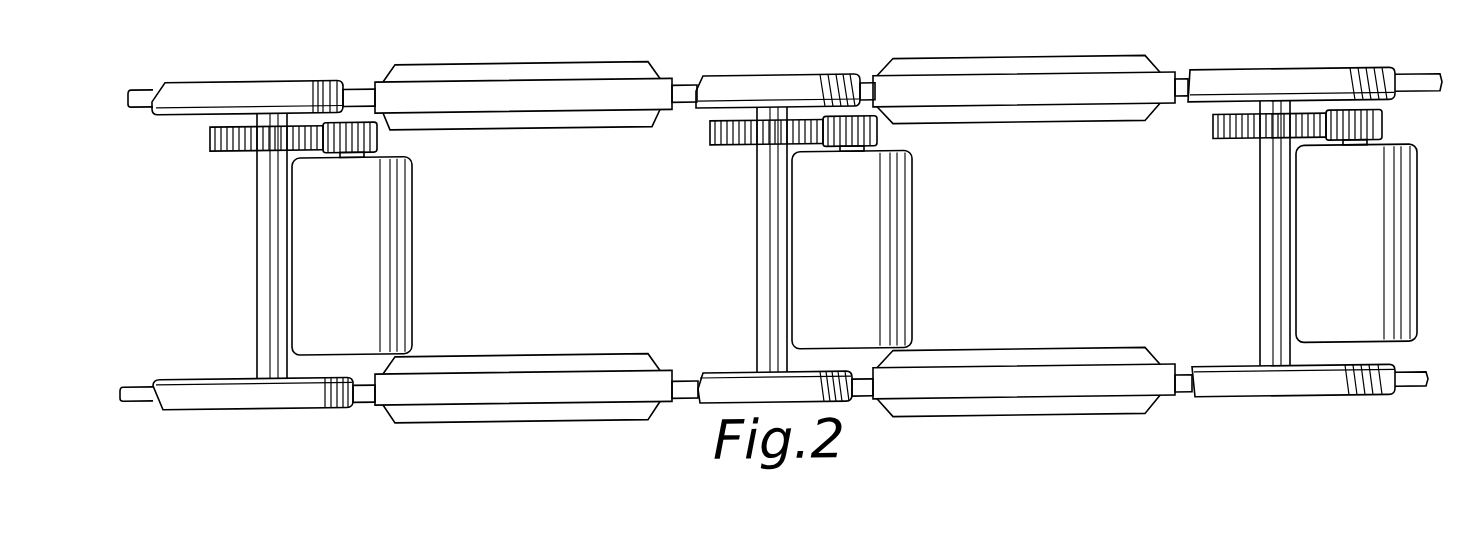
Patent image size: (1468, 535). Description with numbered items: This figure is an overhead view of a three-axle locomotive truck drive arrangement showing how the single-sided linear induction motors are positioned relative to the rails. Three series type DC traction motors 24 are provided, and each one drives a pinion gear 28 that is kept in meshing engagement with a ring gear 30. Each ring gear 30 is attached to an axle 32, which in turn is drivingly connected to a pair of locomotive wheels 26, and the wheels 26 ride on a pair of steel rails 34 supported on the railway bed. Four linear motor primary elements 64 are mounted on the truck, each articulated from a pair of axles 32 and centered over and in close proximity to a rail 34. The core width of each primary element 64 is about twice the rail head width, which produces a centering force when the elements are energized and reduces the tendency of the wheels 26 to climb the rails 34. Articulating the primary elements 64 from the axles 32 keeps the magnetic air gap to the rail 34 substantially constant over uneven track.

The traction motor 24 is at (393, 277).
The locomotive wheel 26 is at (273, 74).
The pinion gear 28 is at (377, 137).
The ring gear 30 is at (210, 126).
The axle 32 is at (257, 245).
The rail 34 is at (143, 87).
The linear motor primary element 64 is at (520, 87).